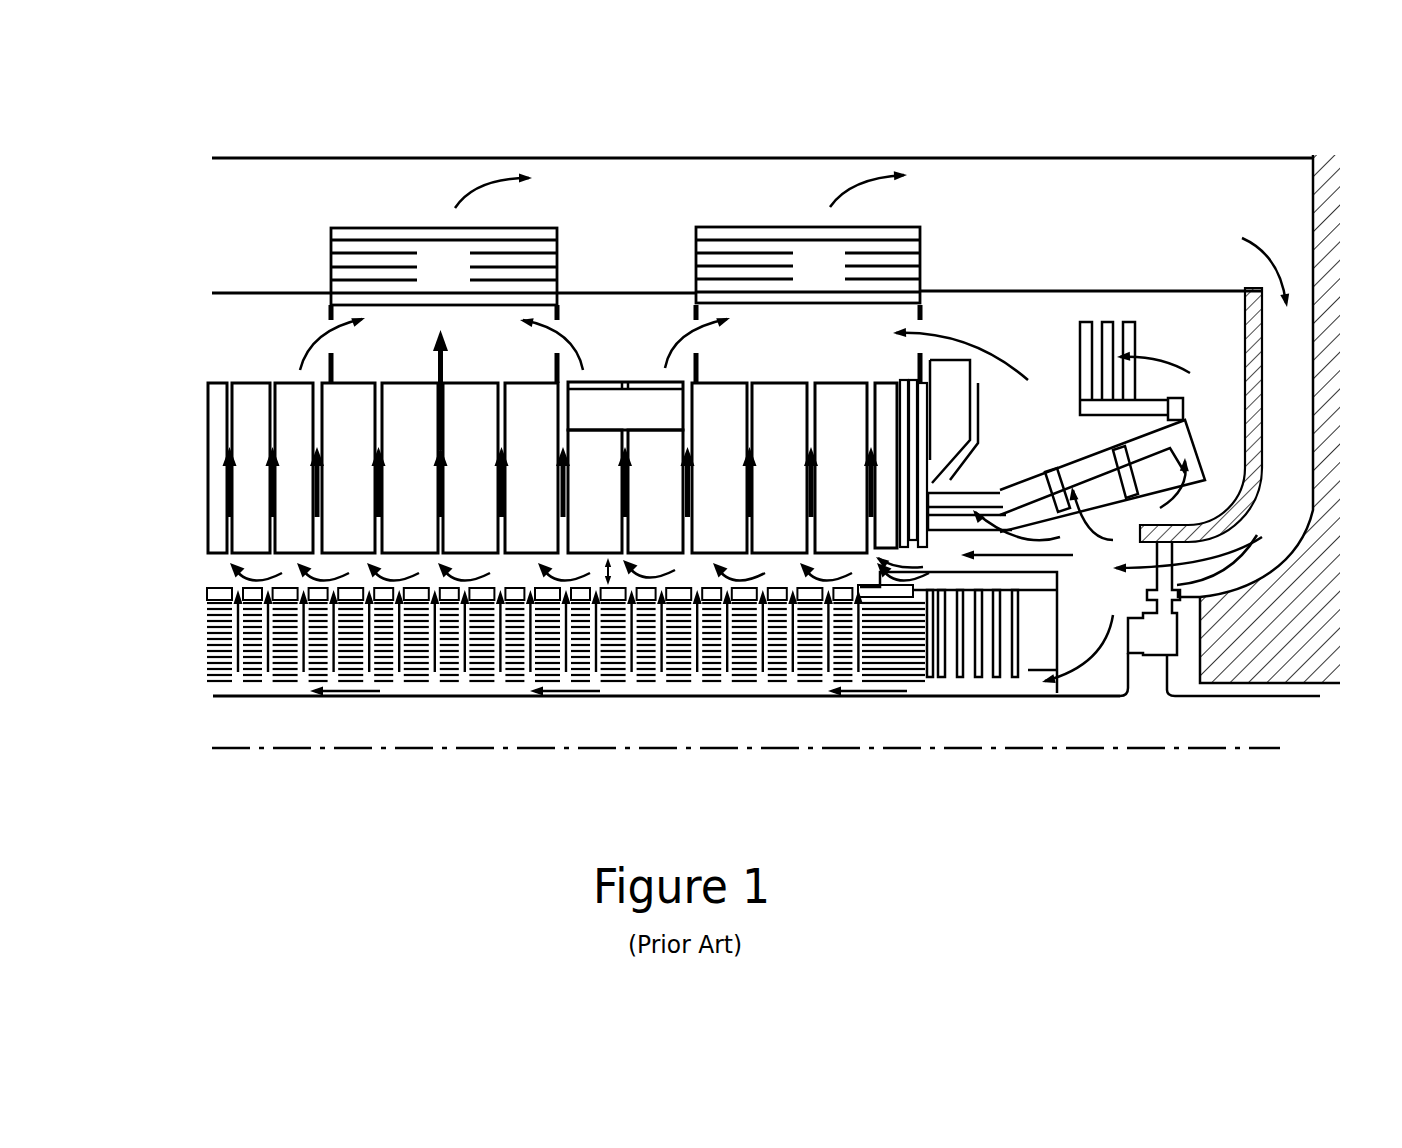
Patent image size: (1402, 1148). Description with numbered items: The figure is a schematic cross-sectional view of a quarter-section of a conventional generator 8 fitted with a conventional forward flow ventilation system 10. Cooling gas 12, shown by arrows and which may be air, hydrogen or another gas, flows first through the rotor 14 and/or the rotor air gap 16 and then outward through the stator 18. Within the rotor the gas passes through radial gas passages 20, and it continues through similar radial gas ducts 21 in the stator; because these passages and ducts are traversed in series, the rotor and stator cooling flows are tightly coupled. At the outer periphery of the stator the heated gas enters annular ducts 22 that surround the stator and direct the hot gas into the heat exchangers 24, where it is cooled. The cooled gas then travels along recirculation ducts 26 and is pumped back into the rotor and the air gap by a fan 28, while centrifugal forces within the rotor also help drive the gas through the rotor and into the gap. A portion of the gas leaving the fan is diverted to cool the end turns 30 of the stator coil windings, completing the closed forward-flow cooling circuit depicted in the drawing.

The generator 8 is at (178, 367).
The forward flow ventilation system 10 is at (1290, 198).
The cooling gas 12 is at (470, 190).
The rotor 14 is at (526, 717).
The rotor air gap 16 is at (613, 588).
The stator 18 is at (148, 517).
The radial gas passages 20 is at (308, 672).
The radial gas ducts 21 is at (627, 382).
The annular ducts 22 is at (410, 354).
The heat exchangers 24 is at (625, 266).
The recirculation ducts 26 is at (975, 215).
The fan 28 is at (1173, 593).
The end turns 30 is at (1082, 465).